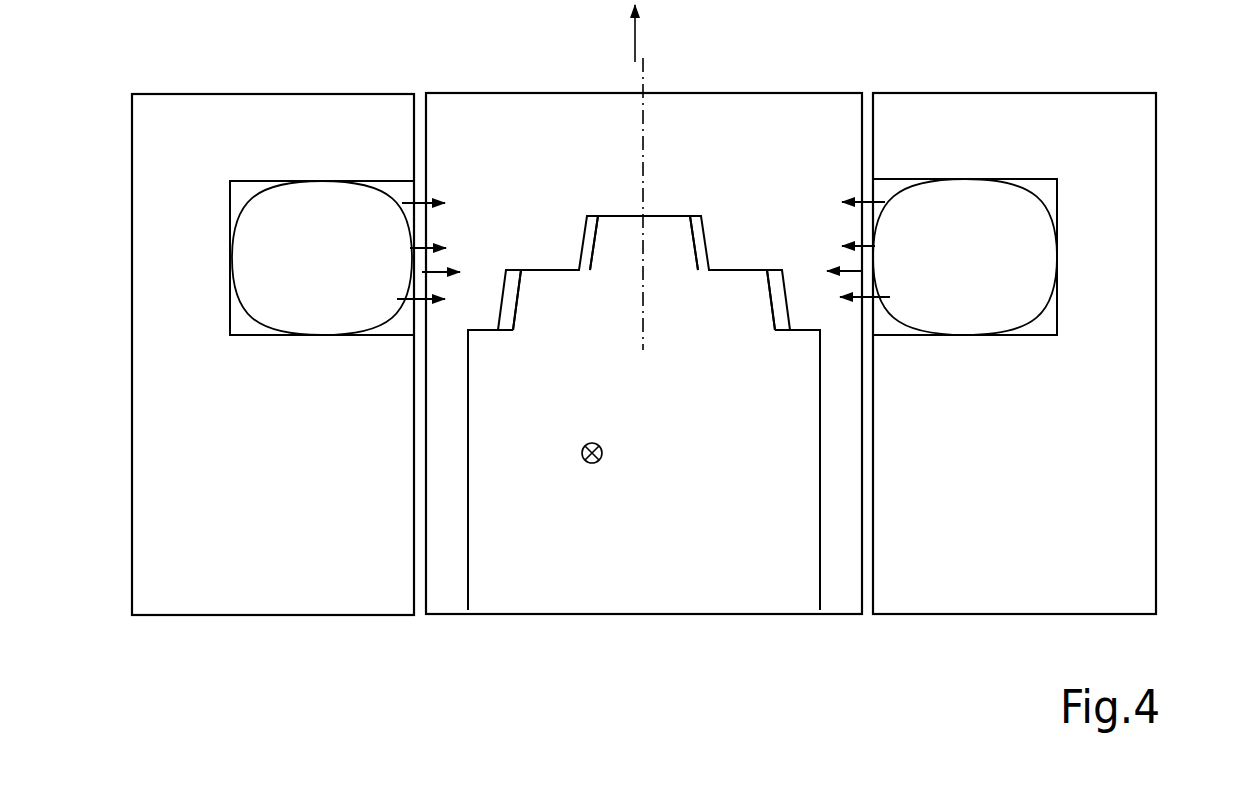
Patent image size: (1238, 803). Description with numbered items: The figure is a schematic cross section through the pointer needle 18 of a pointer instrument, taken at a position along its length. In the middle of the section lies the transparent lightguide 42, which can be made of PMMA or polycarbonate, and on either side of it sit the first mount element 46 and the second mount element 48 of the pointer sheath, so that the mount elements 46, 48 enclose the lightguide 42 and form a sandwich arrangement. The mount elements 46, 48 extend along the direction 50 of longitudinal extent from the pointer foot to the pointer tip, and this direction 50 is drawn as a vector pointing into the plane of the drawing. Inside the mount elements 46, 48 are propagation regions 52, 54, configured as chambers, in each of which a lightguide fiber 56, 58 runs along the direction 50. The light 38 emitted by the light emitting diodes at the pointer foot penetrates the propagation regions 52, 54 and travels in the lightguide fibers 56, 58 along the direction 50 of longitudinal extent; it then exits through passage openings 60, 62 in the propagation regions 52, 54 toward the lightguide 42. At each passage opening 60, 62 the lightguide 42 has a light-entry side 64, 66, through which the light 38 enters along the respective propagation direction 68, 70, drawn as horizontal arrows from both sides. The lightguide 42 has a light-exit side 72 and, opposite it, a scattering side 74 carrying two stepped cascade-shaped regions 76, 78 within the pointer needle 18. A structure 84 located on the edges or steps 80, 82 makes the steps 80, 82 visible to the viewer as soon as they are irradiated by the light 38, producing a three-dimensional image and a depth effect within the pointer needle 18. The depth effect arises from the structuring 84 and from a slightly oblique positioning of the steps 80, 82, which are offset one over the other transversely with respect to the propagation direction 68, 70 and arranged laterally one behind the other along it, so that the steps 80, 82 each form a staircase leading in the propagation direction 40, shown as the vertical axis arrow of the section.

The pointer needle 18 is at (290, 655).
The light 38 is at (448, 170).
The propagation direction 40 is at (638, 32).
The lightguide 42 is at (478, 93).
The first mount element 46 is at (988, 93).
The second mount element 48 is at (336, 94).
The direction of longitudinal extent 50 is at (602, 452).
The propagation region 52 is at (1065, 189).
The propagation region 54 is at (227, 226).
The lightguide fiber 56 is at (1040, 255).
The lightguide fiber 58 is at (307, 320).
The passage opening 60 is at (879, 316).
The passage opening 62 is at (405, 325).
The light-entry side 64 is at (866, 184).
The light-entry side 66 is at (417, 185).
The propagation direction 68 is at (830, 271).
The propagation direction 70 is at (448, 272).
The light-exit side 72 is at (769, 90).
The scattering side 74 is at (629, 572).
The stepped cascade-shaped region 76 is at (724, 334).
The stepped cascade-shaped region 78 is at (585, 332).
The step 80 is at (688, 244).
The step 82 is at (598, 244).
The structure 84 is at (510, 332).